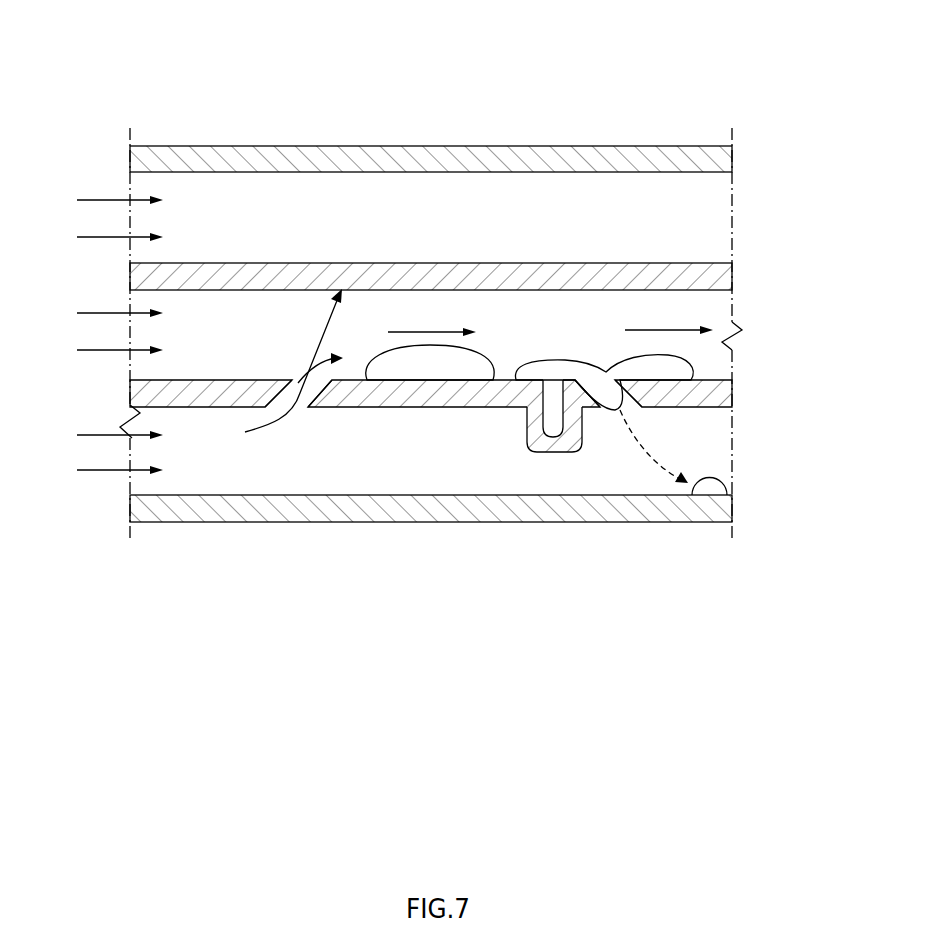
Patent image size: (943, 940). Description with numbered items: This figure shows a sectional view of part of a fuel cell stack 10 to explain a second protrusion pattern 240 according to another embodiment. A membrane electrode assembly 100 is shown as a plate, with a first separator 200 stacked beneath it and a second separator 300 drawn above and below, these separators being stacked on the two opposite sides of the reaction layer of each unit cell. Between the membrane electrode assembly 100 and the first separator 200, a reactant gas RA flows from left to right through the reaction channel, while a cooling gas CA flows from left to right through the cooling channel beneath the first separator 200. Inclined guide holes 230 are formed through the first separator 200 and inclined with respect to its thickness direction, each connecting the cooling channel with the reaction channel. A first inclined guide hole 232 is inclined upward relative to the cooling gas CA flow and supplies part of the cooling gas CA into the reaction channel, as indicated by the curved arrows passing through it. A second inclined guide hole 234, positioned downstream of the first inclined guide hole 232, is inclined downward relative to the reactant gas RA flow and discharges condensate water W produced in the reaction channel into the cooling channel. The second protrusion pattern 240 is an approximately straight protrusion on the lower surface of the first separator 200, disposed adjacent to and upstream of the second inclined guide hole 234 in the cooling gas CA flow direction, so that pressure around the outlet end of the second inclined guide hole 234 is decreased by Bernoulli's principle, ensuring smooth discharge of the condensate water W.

The fuel cell stack 10 is at (199, 41).
The membrane electrode assembly 100 is at (678, 258).
The first separator 200 is at (465, 509).
The inclined guide holes 230 is at (453, 513).
The first inclined guide hole 232 is at (326, 393).
The second inclined guide hole 234 is at (591, 488).
The second protrusion pattern 240 is at (542, 443).
The second separator 300 is at (716, 160).
The condensate water W is at (484, 352).
The reactant gas RA is at (376, 275).
The cooling gas CA is at (262, 565).